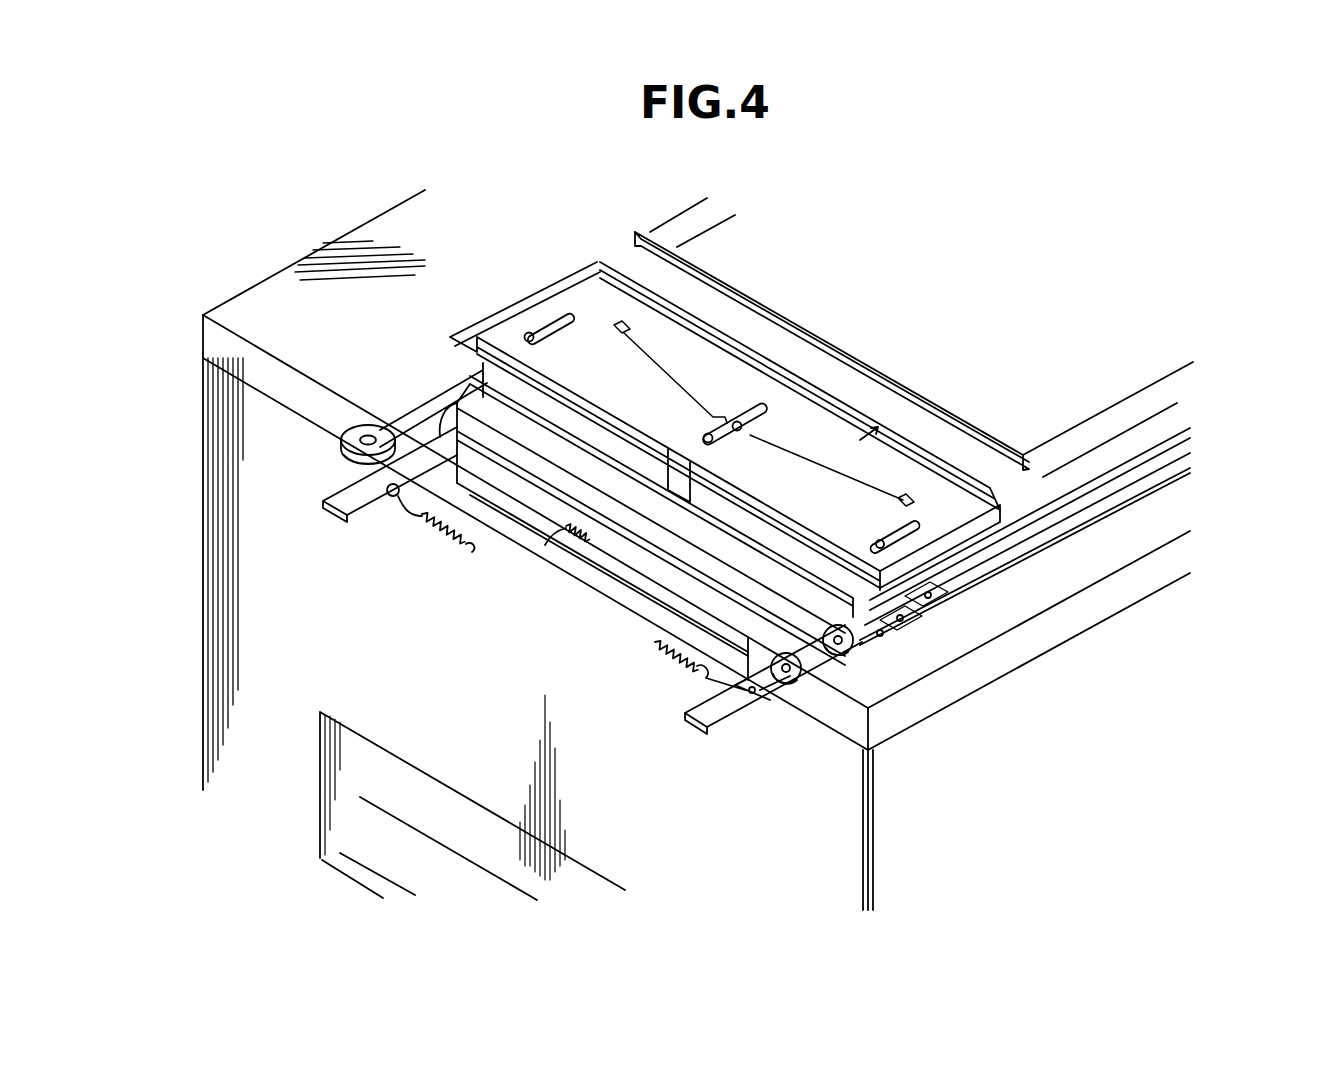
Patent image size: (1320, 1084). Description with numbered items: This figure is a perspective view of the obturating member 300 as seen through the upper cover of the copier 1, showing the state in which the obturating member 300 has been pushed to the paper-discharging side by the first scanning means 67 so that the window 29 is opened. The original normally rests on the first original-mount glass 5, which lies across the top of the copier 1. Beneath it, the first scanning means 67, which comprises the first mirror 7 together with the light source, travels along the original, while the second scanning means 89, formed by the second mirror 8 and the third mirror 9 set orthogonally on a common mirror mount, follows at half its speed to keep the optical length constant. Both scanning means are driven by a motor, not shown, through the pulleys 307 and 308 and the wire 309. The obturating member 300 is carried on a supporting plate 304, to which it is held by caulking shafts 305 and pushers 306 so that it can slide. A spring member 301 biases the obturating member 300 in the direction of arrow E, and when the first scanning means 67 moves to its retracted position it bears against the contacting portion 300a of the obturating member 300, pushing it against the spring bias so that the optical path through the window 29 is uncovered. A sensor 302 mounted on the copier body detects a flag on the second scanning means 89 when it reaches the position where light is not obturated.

The copier 1 is at (1010, 705).
The first original-mount glass 5 is at (895, 310).
The first mirror 7 is at (937, 632).
The second mirror 8 is at (543, 478).
The third mirror 9 is at (517, 485).
The window 29 is at (622, 257).
The first scanning means 67 is at (473, 407).
The second scanning means 89 is at (457, 410).
The obturating member 300 is at (1020, 497).
The contacting portion 300a is at (667, 495).
The spring member 301 is at (842, 478).
The sensor 302 is at (562, 537).
The supporting plate 304 is at (554, 290).
The caulking shaft 305 is at (528, 330).
The pusher 306 is at (524, 337).
The pulley 307 is at (340, 457).
The pulley 308 is at (341, 440).
The wire 309 is at (385, 392).